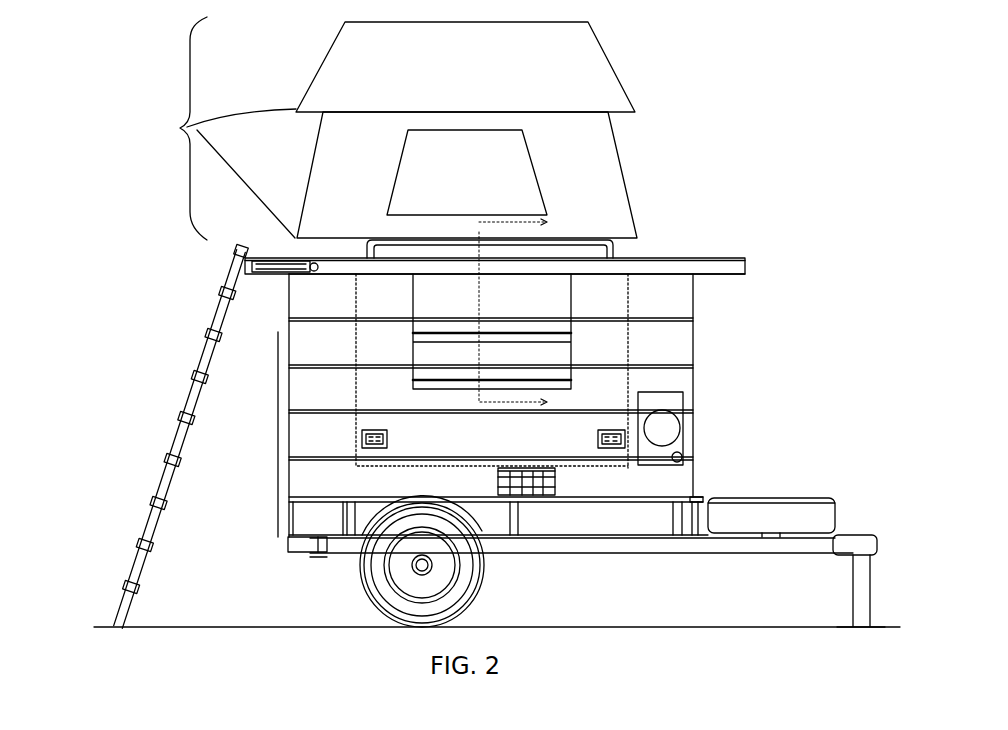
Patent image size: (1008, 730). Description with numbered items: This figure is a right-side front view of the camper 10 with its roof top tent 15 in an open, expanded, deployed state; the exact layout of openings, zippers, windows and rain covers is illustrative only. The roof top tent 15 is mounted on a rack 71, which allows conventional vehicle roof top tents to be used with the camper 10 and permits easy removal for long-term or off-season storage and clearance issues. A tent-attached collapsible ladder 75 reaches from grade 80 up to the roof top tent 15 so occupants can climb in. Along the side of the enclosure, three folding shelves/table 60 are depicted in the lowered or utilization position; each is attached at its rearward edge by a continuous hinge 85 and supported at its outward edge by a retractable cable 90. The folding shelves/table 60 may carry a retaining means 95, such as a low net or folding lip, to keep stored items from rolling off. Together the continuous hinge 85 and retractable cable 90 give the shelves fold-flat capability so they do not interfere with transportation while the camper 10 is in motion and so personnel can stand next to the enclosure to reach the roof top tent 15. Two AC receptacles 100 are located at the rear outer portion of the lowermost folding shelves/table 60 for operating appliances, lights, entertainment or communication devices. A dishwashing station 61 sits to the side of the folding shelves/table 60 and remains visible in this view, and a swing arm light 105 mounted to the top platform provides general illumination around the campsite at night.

The camper 10 is at (90, 127).
The roof top tent 15 is at (180, 128).
The folding shelves/table 60 is at (413, 343).
The dishwashing station 61 is at (683, 420).
The rack 71 is at (535, 333).
The collapsible ladder 75 is at (190, 403).
The grade 80 is at (202, 627).
The continuous hinge 85 is at (553, 337).
The retractable cable 90 is at (413, 298).
The retaining means 95 is at (358, 447).
The AC receptacles 100 is at (358, 442).
The swing arm light 105 is at (247, 248).